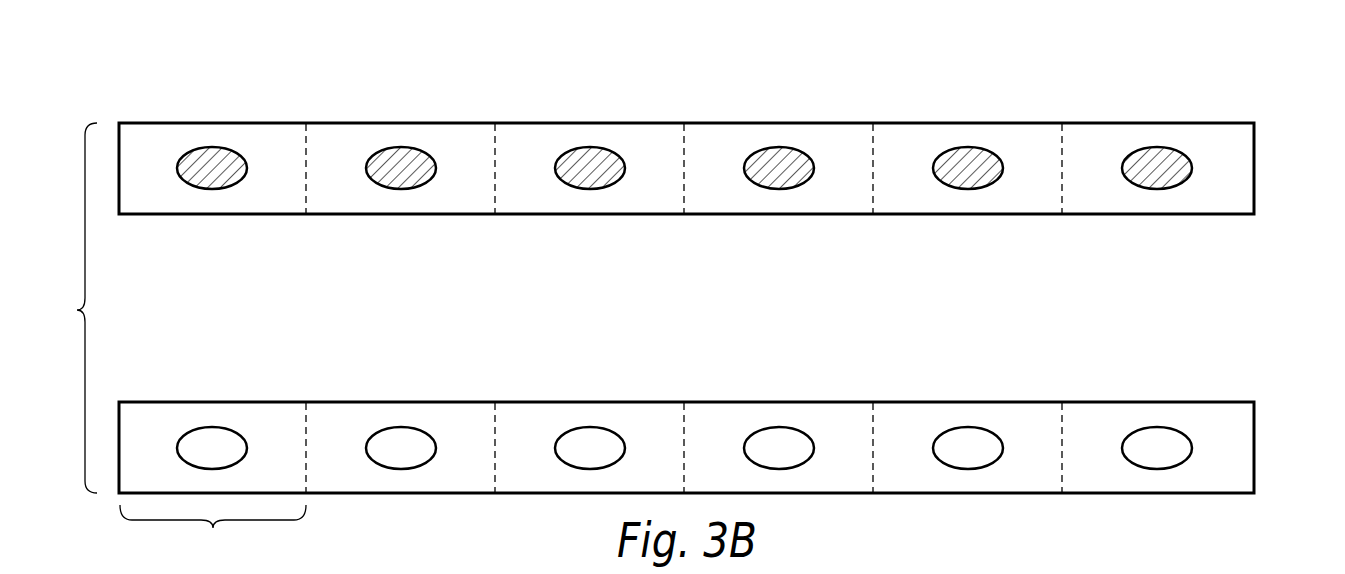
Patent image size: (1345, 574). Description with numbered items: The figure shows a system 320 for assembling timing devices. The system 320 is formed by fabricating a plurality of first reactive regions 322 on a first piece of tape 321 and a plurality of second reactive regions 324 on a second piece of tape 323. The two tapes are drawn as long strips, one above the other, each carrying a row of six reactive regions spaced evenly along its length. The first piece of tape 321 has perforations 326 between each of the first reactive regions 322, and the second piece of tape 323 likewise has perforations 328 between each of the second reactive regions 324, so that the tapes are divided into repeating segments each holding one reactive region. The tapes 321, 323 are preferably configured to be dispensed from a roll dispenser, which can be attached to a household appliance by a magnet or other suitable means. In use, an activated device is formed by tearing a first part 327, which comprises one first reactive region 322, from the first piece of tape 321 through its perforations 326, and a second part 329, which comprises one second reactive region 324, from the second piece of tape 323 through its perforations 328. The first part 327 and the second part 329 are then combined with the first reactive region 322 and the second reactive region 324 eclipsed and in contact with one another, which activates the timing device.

The system 320 is at (63, 308).
The first piece of tape 321 is at (1255, 168).
The first reactive regions 322 is at (212, 147).
The second piece of tape 323 is at (1255, 447).
The second reactive regions 324 is at (212, 428).
The perforations 326 is at (306, 123).
The first part 327 is at (211, 269).
The perforations 328 is at (306, 403).
The second part 329 is at (213, 533).